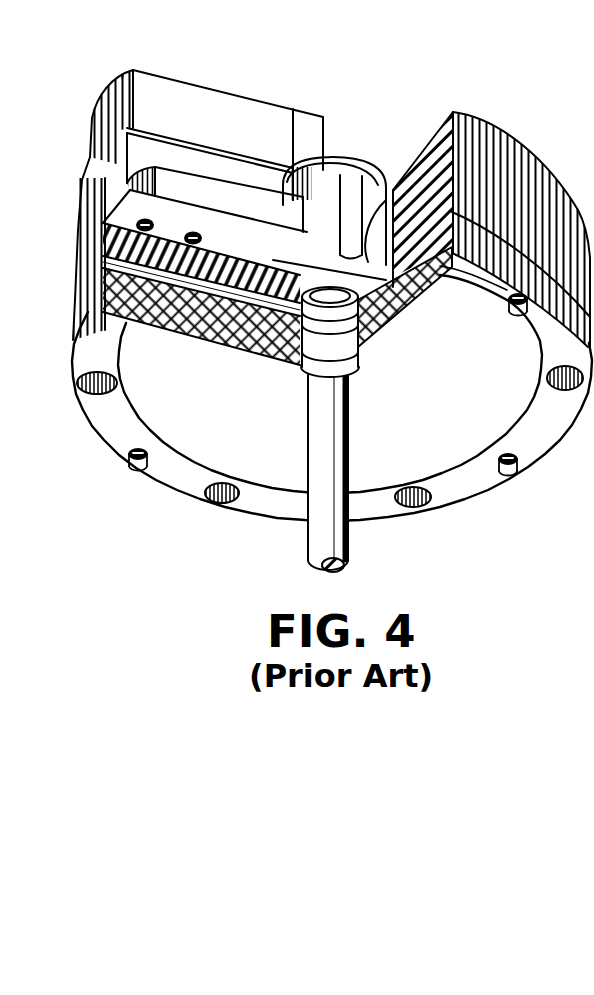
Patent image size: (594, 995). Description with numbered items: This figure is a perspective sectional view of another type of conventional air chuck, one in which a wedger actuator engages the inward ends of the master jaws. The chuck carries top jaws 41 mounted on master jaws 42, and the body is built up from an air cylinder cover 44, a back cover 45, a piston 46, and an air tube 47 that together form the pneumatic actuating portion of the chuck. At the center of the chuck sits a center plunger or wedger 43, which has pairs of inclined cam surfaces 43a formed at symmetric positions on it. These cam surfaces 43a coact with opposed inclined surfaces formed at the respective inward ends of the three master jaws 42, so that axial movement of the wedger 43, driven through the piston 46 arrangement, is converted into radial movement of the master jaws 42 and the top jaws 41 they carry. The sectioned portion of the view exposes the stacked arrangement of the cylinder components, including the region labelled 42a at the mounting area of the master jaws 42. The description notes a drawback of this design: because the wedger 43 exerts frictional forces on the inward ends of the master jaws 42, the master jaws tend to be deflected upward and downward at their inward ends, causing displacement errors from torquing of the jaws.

The top jaws 41 is at (206, 124).
The master jaws 42 is at (217, 172).
The mounting flange of block 42a is at (201, 232).
The center plunger or wedger 43 is at (405, 133).
The inclined cam surfaces 43a is at (334, 197).
The air cylinder cover 44 is at (160, 248).
The back cover 45 is at (160, 299).
The piston 46 is at (277, 323).
The air tube 47 is at (300, 436).